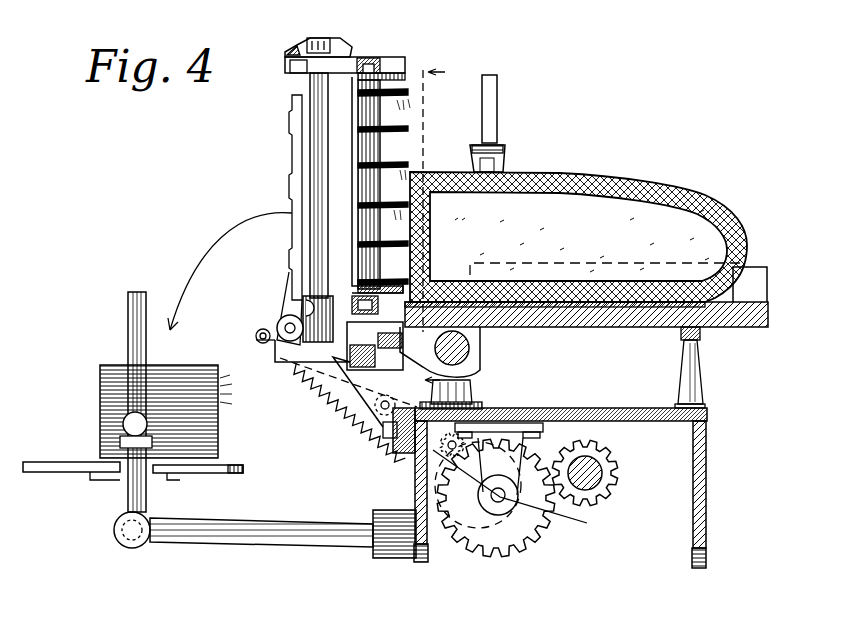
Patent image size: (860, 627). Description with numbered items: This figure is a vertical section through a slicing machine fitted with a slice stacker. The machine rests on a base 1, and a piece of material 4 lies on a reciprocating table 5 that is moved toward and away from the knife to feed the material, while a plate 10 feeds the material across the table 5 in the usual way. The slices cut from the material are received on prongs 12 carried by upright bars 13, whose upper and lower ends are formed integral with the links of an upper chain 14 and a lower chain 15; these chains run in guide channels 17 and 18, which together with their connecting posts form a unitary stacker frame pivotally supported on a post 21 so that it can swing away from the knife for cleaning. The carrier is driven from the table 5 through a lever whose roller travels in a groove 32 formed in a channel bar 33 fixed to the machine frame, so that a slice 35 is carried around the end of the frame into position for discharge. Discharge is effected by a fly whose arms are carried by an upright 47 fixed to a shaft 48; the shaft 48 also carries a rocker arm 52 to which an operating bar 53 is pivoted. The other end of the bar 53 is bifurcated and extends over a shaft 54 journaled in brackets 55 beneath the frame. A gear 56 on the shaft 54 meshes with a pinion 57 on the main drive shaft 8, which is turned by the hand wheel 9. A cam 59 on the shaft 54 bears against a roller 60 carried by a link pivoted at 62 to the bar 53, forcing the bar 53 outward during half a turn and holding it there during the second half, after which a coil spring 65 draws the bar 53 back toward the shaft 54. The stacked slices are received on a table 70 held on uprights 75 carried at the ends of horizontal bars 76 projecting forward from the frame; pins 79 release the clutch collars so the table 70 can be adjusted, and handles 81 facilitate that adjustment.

The base 1 is at (692, 503).
The piece of material 4 is at (578, 188).
The reciprocating table 5 is at (571, 322).
The main drive shaft 8 is at (602, 473).
The hand wheel 9 is at (440, 233).
The plate 10 is at (738, 300).
The prongs or spikes 12 is at (385, 187).
The upright bars 13 is at (366, 172).
The chain 14 is at (372, 66).
The chain 15 is at (358, 296).
The guide channel 17 is at (292, 64).
The guide channel 18 is at (375, 346).
The post 21 is at (312, 86).
The groove 32 is at (478, 370).
The channel bar 33 is at (470, 336).
The slice 35 is at (176, 411).
The upright 47 is at (292, 247).
The shaft 48 is at (288, 328).
The rocker arm 52 is at (256, 336).
The operating bar 53 is at (330, 392).
The shaft 54 is at (522, 490).
The brackets 55 is at (556, 412).
The gear 56 is at (493, 552).
The pinion 57 is at (612, 458).
The cam 59 is at (462, 526).
The roller 60 is at (506, 423).
The pivot 62 is at (372, 445).
The coil spring 65 is at (355, 432).
The table 70 is at (208, 470).
The uprights 75 is at (128, 327).
The horizontal bars 76 is at (252, 540).
The pins 79 is at (133, 445).
The handles 81 is at (125, 428).